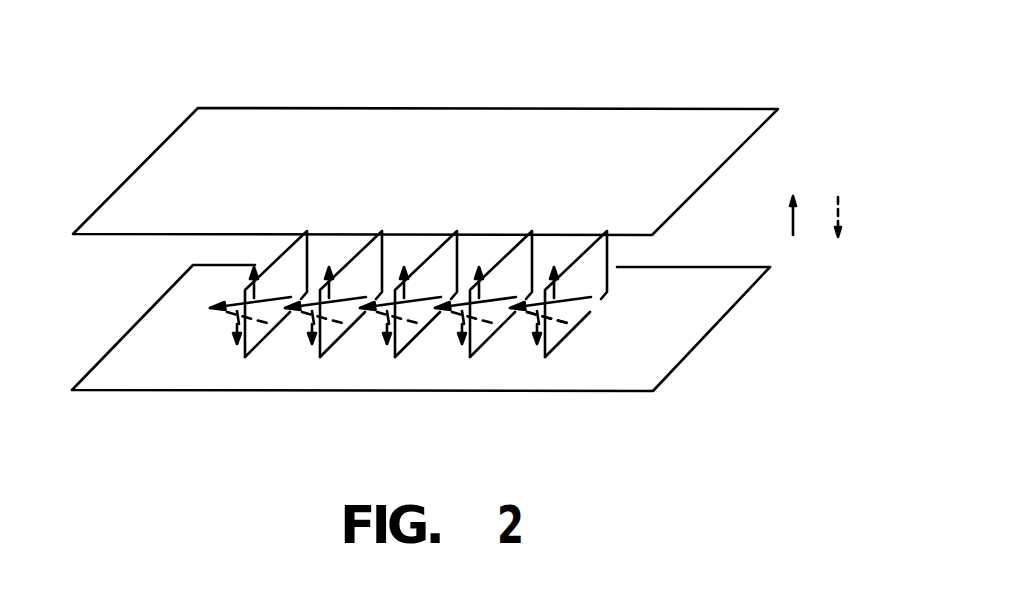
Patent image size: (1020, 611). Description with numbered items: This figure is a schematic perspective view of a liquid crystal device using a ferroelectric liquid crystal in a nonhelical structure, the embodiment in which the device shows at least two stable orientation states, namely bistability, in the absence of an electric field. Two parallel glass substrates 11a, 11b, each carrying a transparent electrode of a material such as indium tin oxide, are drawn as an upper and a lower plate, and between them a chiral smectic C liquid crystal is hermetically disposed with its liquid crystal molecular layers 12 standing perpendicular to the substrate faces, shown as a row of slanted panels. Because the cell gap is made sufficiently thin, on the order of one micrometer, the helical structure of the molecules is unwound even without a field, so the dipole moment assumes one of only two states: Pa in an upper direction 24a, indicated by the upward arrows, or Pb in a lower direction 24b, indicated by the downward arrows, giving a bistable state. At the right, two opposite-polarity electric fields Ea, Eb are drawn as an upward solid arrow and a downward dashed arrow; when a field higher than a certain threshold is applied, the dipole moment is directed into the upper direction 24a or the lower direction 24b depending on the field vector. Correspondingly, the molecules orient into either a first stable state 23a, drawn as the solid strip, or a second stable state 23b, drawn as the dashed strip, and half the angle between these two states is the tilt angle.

The substrate 11a is at (704, 118).
The substrate 11b is at (712, 320).
The liquid crystal molecular layers 12 is at (608, 260).
The first stable state 23a is at (283, 297).
The second stable state 23b is at (243, 320).
The upper direction 24a is at (250, 279).
The lower direction 24b is at (240, 320).
The electric field Ea is at (808, 217).
The electric field Eb is at (856, 218).